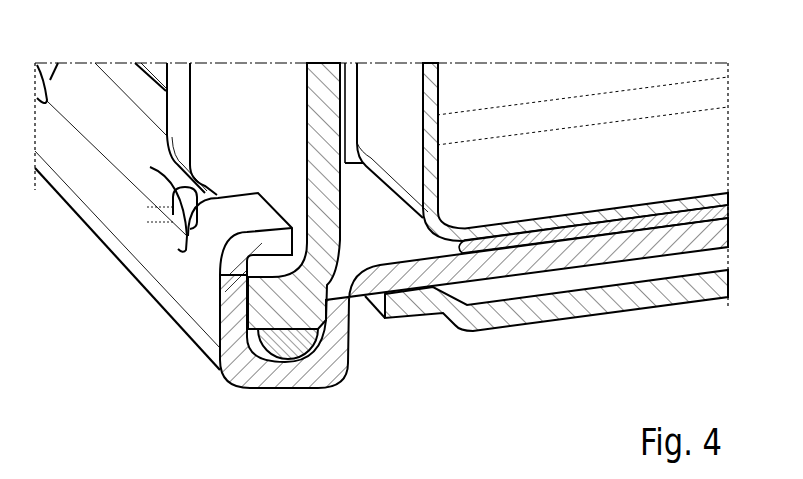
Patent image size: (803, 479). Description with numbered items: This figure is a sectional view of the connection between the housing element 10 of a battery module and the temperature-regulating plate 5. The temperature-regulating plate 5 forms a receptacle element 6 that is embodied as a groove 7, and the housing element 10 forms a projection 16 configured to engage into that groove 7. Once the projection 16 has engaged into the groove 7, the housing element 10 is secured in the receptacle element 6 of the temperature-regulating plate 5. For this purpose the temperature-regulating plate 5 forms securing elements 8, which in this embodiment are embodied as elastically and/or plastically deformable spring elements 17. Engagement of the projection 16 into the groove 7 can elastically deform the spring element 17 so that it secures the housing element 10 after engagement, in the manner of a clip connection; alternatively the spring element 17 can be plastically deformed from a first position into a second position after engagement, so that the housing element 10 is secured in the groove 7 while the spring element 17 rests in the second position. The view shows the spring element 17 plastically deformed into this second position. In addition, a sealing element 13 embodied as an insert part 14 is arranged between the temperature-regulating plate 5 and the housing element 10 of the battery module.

The housing element 10 is at (325, 80).
The temperature-regulating plate 5 is at (330, 383).
The projection 16 is at (272, 303).
The sealing element 13 is at (288, 386).
The insert part 14 is at (282, 358).
The spring element 17 is at (163, 216).
The groove 7 is at (163, 216).
The securing element 8 is at (218, 230).
The receptacle element 6 is at (221, 388).